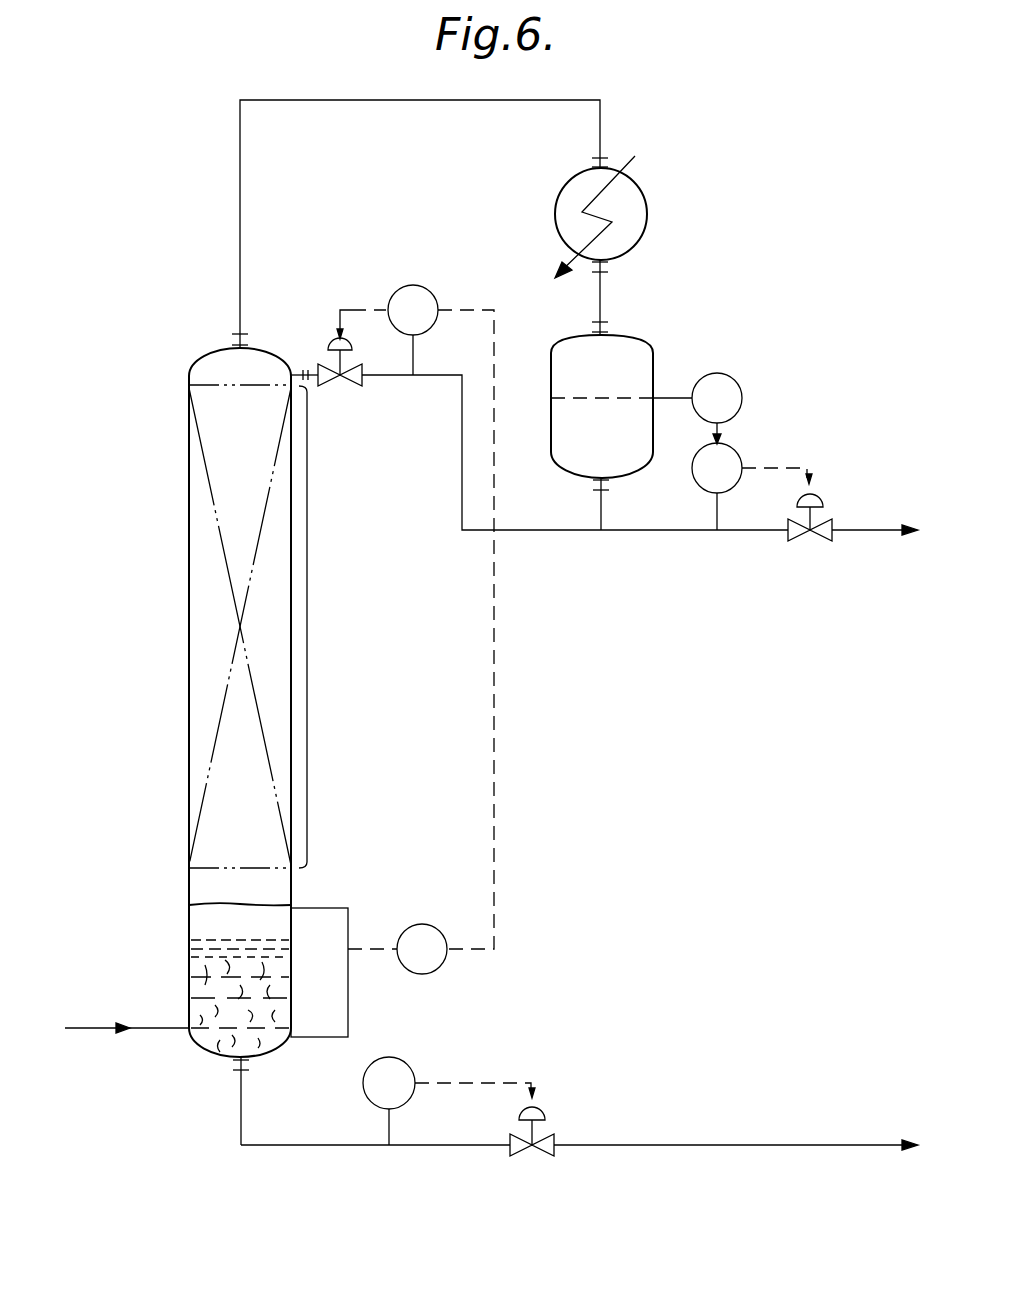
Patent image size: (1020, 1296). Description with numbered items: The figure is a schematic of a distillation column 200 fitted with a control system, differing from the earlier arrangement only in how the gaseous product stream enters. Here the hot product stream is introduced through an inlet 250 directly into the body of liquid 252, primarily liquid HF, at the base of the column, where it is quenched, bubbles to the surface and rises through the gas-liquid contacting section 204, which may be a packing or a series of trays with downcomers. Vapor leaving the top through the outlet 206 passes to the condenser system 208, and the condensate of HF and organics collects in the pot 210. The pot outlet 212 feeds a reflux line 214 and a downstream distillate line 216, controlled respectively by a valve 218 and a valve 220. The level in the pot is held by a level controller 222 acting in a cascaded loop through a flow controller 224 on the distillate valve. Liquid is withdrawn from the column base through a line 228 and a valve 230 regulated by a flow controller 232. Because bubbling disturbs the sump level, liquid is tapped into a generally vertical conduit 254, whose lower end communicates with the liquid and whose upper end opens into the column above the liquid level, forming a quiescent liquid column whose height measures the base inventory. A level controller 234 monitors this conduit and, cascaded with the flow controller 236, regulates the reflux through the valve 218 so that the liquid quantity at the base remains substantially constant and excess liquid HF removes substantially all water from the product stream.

The distillation column 200 is at (152, 667).
The fluid-fluid contacting zone 204 is at (307, 621).
The outlet 206 is at (228, 343).
The condenser system 208 is at (647, 212).
The pot 210 is at (655, 352).
The outlet 212 is at (592, 485).
The reflux line 214 is at (548, 533).
The downstream line 216 is at (662, 533).
The valve 218 is at (342, 380).
The valve 220 is at (810, 535).
The level controller 222 is at (735, 383).
The flow controller 224 is at (737, 452).
The line 228 is at (302, 1148).
The valve 230 is at (532, 1158).
The flow controller 232 is at (410, 1073).
The level controller 234 is at (438, 968).
The flow controller 236 is at (414, 285).
The inlet 250 is at (104, 1035).
The body of liquid 252 is at (205, 992).
The conduit 254 is at (348, 1007).